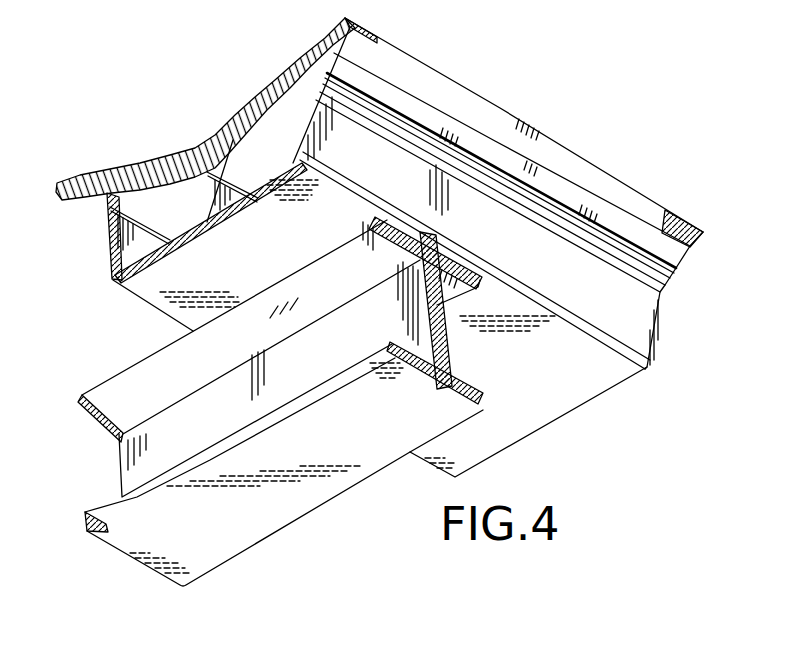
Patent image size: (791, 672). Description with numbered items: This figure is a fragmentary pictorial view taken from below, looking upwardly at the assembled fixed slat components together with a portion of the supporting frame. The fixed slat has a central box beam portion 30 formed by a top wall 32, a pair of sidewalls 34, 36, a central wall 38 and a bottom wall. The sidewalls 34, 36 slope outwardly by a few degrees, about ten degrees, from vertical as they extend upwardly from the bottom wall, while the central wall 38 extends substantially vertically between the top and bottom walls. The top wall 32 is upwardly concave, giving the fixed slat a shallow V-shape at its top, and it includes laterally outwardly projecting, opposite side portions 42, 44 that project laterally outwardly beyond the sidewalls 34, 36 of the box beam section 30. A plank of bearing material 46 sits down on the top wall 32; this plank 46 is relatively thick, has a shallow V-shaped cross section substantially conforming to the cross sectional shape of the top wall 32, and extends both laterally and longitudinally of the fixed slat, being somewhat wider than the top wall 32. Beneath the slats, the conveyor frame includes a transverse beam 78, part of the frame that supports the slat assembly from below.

The central box beam portion 30 is at (248, 272).
The top wall 32 is at (273, 204).
The sidewall 34 is at (105, 247).
The sidewall 36 is at (192, 0).
The central wall 38 is at (200, 207).
The side portion 42 is at (87, 210).
The side portion 44 is at (457, 143).
The plank of bearing material 46 is at (397, 47).
The transverse beam 78 is at (322, 482).